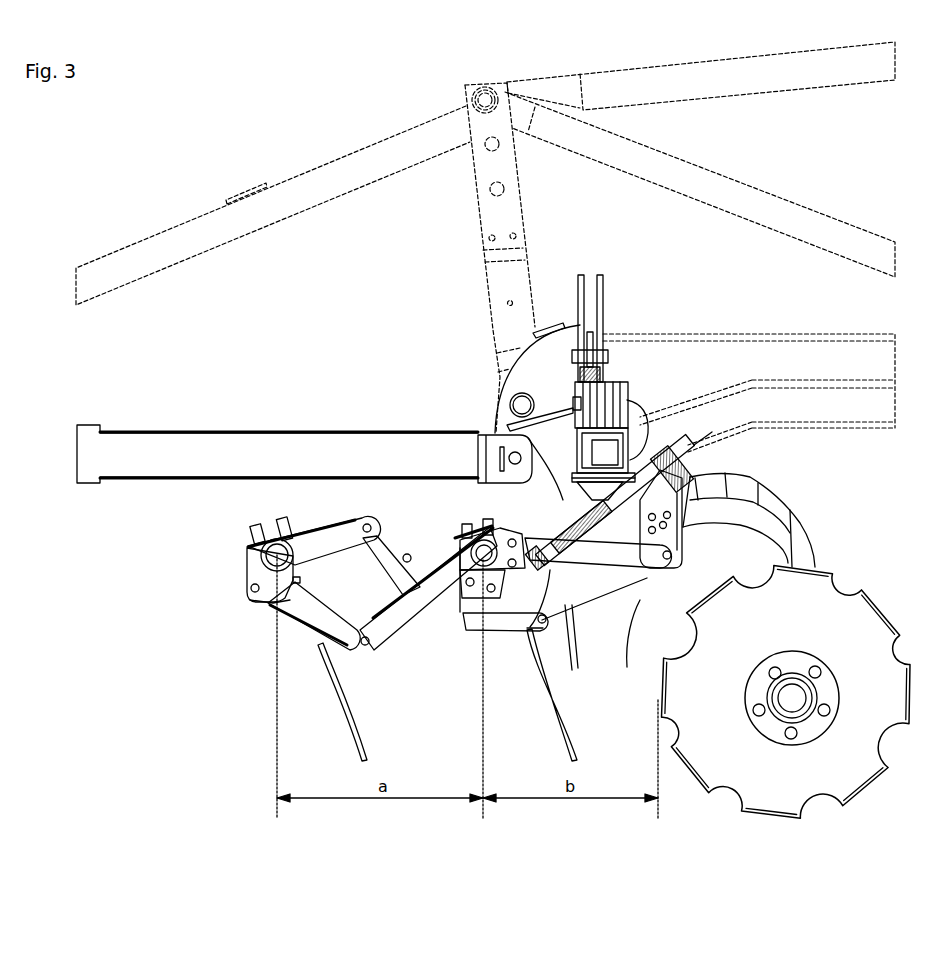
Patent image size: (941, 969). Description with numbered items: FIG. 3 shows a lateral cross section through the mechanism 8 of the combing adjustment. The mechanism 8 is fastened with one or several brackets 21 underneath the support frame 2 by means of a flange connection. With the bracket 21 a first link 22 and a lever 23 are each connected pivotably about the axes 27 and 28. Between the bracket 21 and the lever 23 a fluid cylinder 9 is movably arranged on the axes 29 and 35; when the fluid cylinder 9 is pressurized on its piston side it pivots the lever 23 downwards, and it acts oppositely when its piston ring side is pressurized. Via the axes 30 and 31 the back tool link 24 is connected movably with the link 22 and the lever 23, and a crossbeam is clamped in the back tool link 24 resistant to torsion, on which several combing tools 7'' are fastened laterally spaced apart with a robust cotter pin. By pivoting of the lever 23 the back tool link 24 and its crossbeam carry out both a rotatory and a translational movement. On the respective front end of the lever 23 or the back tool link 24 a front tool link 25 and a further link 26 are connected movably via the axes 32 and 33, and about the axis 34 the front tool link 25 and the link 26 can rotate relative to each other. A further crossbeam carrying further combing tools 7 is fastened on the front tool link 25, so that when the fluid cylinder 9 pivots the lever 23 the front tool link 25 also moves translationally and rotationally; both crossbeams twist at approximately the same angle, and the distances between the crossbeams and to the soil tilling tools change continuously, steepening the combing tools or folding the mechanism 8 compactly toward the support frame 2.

The support frame 2 is at (644, 405).
The combing tools 7 is at (335, 711).
The combing tools 7'' is at (545, 707).
The mechanism of the combing adjustment 8 is at (626, 722).
The fluid cylinder 9 is at (667, 565).
The bracket 21 is at (565, 607).
The first link 22 is at (660, 572).
The lever 23 is at (490, 600).
The back tool link 24 is at (402, 620).
The front tool link 25 is at (332, 528).
The link 26 is at (295, 643).
The axis 27 is at (808, 531).
The axis 28 is at (578, 668).
The axis 29 is at (702, 447).
The axis 30 is at (468, 470).
The axis 31 is at (470, 600).
The axis 32 is at (372, 650).
The axis 33 is at (376, 520).
The axis 34 is at (247, 592).
The axis 35 is at (482, 600).